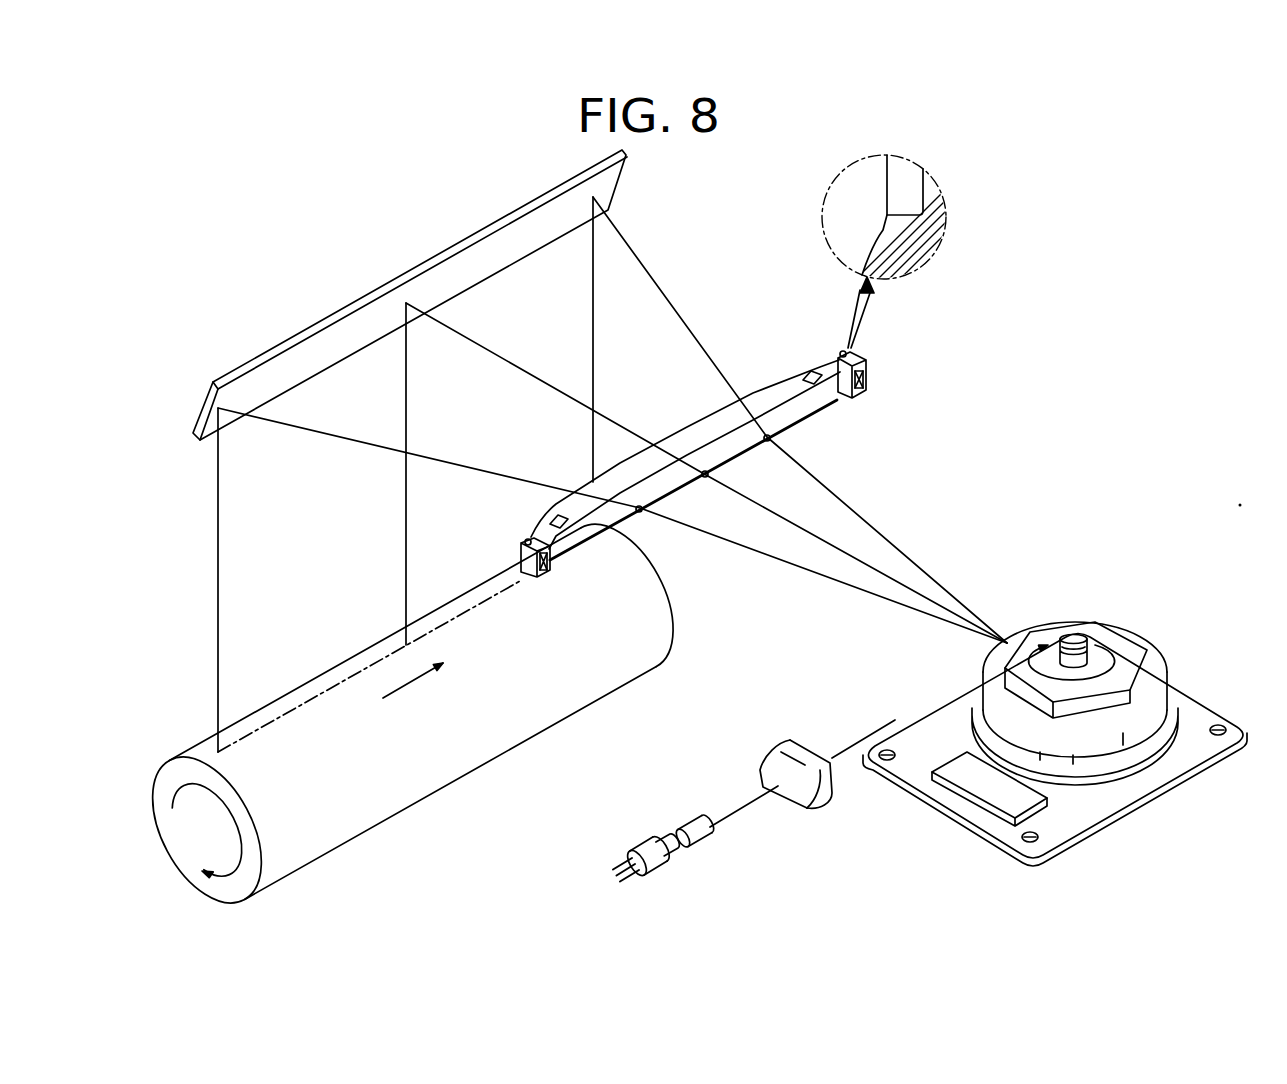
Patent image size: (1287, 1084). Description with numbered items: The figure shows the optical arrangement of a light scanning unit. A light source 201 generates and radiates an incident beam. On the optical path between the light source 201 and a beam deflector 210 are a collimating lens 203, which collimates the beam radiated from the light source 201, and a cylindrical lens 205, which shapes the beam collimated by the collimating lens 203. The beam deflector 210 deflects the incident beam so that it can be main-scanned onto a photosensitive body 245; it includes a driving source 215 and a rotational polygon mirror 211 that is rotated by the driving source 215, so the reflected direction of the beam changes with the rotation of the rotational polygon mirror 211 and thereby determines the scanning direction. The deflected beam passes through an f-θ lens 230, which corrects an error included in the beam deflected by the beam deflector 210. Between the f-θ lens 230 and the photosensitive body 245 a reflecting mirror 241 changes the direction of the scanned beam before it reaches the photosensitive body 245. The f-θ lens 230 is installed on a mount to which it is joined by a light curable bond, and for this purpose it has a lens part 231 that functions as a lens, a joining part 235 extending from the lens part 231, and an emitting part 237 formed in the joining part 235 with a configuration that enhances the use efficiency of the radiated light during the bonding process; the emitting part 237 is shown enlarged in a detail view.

The light source 201 is at (662, 860).
The collimating lens 203 is at (708, 838).
The cylindrical lens 205 is at (818, 804).
The beam deflector 210 is at (1055, 704).
The rotational polygon mirror 211 is at (1123, 647).
The driving source 215 is at (1162, 665).
The f-θ lens 230 is at (741, 439).
The lens part 231 is at (797, 413).
The joining part 235 is at (867, 360).
The emitting part 237 is at (905, 193).
The reflecting mirror 241 is at (487, 223).
The photosensitive body 245 is at (465, 763).